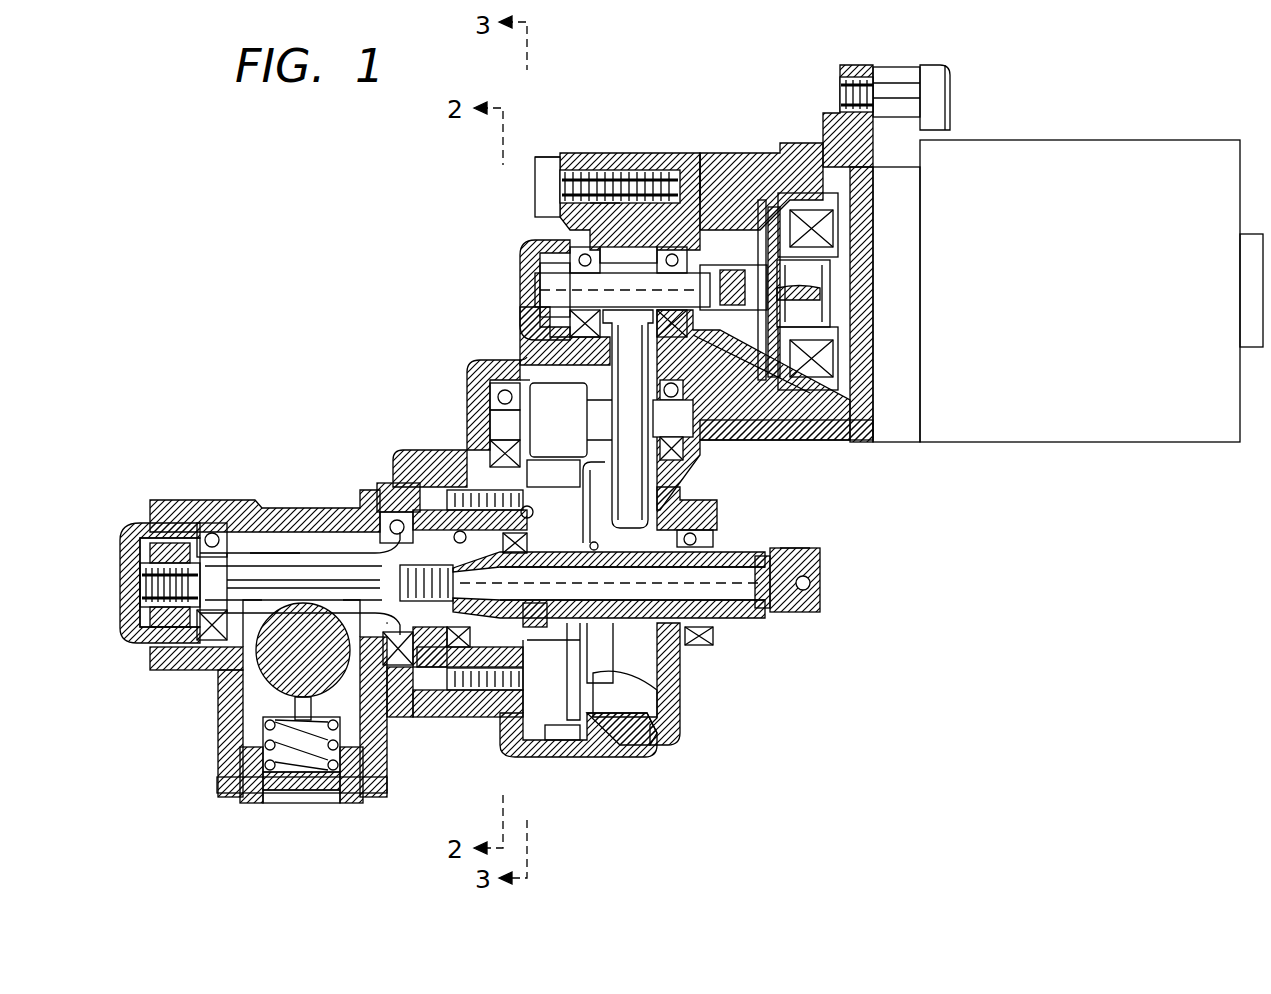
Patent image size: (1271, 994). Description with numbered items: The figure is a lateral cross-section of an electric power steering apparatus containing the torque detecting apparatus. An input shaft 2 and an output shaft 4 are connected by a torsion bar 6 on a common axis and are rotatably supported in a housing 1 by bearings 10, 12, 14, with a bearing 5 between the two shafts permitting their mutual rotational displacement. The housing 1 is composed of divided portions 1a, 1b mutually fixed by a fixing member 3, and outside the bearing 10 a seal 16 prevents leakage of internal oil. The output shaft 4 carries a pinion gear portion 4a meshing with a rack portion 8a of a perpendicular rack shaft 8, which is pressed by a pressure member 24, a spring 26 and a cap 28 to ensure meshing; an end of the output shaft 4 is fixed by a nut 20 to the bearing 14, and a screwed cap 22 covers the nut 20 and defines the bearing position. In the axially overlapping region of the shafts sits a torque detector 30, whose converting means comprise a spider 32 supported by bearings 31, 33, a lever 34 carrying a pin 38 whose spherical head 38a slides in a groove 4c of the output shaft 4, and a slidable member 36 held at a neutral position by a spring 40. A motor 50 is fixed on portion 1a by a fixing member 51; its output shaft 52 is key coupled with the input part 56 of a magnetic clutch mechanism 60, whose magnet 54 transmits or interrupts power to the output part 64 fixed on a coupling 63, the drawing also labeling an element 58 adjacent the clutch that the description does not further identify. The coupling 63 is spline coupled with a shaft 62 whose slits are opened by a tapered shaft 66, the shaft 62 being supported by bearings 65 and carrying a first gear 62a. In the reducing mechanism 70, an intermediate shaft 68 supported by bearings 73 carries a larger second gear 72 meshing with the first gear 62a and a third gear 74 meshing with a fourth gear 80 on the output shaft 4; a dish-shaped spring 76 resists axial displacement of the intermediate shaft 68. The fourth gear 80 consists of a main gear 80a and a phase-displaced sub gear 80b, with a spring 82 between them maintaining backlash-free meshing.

The housing 1 is at (328, 508).
The housing portion 1a is at (668, 733).
The housing portion 1b is at (410, 717).
The input shaft 2 is at (793, 612).
The fixing member 3 is at (545, 160).
The output shaft 4 is at (285, 580).
The pinion gear portion 4a is at (272, 553).
The groove 4c is at (705, 640).
The bearing 5 is at (388, 512).
The torsion bar 6 is at (760, 552).
The rack shaft 8 is at (275, 668).
The rack portion 8a is at (197, 670).
The bearing 10 is at (685, 500).
The bearing 12 is at (390, 484).
The bearing 14 is at (212, 523).
The seal 16 is at (712, 538).
The nut 20 is at (170, 543).
The screwed cap 22 is at (120, 545).
The pressure member 24 is at (218, 740).
The spring 26 is at (270, 800).
The cap 28 is at (350, 803).
The torque detector 30 is at (447, 720).
The bearing 31 is at (420, 452).
The spider 32 is at (490, 400).
The bearing 33 is at (560, 740).
The lever 34 is at (490, 450).
The slidable member 36 is at (472, 695).
The pin 38 is at (545, 515).
The spherical head 38a is at (571, 420).
The spring 40 is at (500, 720).
The motor 50 is at (1060, 148).
The fixing member 51 is at (950, 80).
The output shaft of the motor 52 is at (830, 288).
The magnet 54 is at (838, 358).
The input part 56 is at (838, 243).
The motor flange 58 is at (780, 153).
The clutch mechanism 60 is at (750, 135).
The shaft 62 is at (560, 225).
The first gear 62a is at (603, 203).
The coupling 63 is at (713, 200).
The output part 64 is at (730, 200).
The bearings 65 is at (573, 170).
The tapered shaft 66 is at (520, 262).
The intermediate shaft 68 is at (640, 350).
The reducing mechanism 70 is at (525, 345).
The second gear 72 is at (790, 440).
The bearings 73 is at (470, 362).
The third gear 74 is at (565, 370).
The dish-shaped spring 76 is at (468, 385).
The fourth gear 80 is at (600, 757).
The main gear 80a is at (573, 757).
The sub gear 80b is at (647, 752).
The spring 82 is at (660, 702).